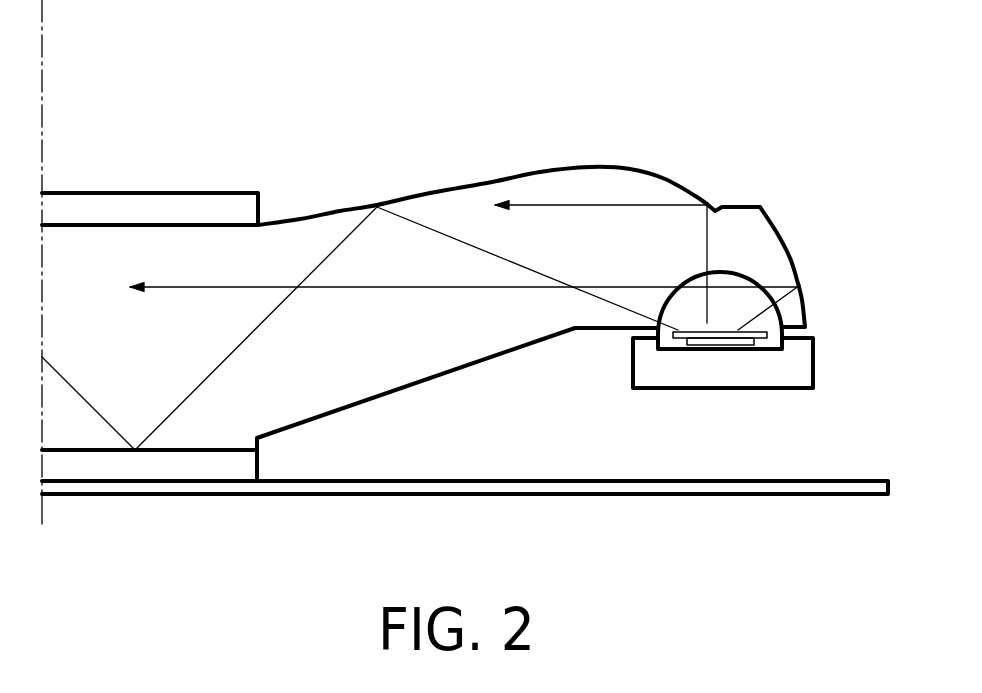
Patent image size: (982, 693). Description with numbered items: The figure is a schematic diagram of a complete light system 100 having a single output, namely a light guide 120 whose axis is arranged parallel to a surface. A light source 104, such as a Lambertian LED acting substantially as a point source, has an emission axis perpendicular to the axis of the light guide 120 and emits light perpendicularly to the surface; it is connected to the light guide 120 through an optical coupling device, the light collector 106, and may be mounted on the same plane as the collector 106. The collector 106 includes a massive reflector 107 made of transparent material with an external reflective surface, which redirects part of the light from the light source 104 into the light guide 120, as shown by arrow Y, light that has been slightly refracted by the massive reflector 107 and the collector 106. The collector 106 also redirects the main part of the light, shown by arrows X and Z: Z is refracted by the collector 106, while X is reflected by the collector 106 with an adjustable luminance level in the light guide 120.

The complete light system 100 is at (565, 243).
The light source 104 is at (723, 397).
The light collector 106 is at (492, 182).
The massive reflector 107 is at (777, 228).
The light guide 120 is at (150, 193).
The arrow X is at (600, 205).
The arrow Y is at (780, 287).
The arrow Z is at (400, 212).